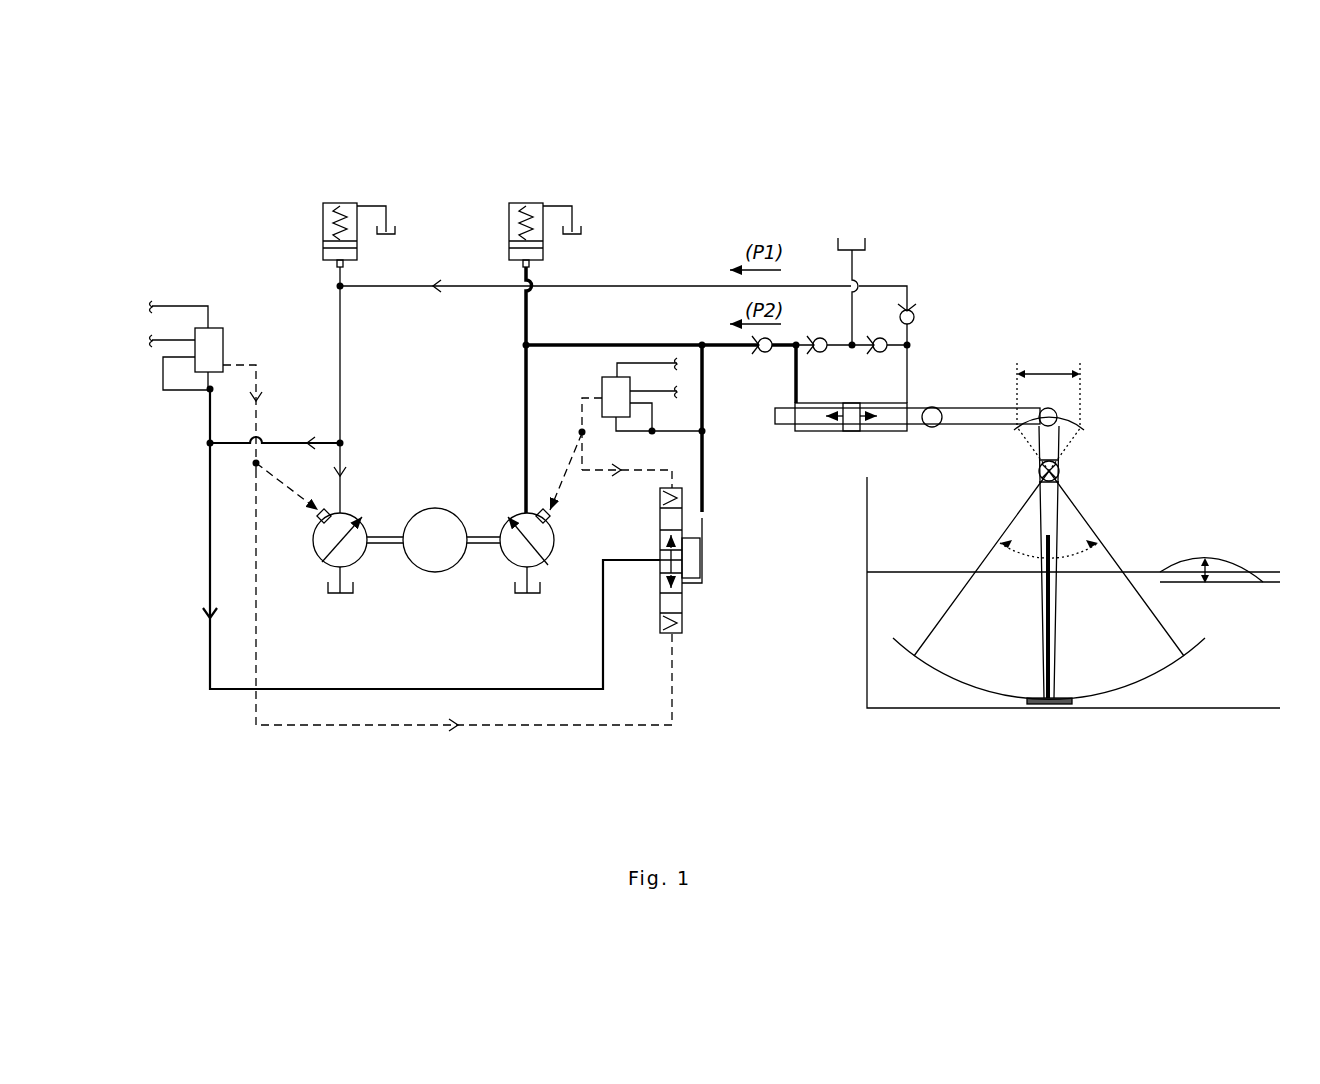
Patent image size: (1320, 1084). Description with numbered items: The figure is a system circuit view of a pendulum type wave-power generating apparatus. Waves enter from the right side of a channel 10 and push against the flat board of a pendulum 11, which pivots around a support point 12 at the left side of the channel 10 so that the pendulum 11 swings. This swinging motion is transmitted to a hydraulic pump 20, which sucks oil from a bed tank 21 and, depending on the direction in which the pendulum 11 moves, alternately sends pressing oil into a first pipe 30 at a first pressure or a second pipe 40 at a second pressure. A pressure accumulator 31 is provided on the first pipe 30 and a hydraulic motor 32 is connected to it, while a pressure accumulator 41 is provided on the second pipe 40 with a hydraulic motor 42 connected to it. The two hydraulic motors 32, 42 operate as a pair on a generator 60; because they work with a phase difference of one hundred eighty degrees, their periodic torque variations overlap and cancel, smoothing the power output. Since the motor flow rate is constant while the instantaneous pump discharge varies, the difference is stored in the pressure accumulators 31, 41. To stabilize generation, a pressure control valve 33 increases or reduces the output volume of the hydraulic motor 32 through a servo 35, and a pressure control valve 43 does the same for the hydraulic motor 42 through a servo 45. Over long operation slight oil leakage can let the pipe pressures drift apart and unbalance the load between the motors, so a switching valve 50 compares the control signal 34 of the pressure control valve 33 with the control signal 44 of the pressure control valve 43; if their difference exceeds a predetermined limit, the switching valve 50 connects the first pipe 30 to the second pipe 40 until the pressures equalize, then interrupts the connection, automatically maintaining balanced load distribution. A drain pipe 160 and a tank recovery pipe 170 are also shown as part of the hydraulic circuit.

The channel 10 is at (1187, 710).
The pendulum 11 is at (1041, 628).
The support point 12 is at (1062, 471).
The hydraulic pump 20 is at (902, 401).
The bed tank 21 is at (870, 243).
The pipe 30 is at (163, 378).
The pressure accumulator 31 is at (334, 200).
The hydraulic motor 32 is at (364, 562).
The pressure control valve 33 is at (222, 327).
The control signal 34 is at (551, 727).
The servo 35 is at (338, 508).
The pipe 40 is at (678, 343).
The pressure accumulator 41 is at (522, 200).
The hydraulic motor 42 is at (506, 562).
The pressure control valve 43 is at (604, 375).
The control signal 44 is at (636, 471).
The servo 45 is at (529, 508).
The switching valve 50 is at (688, 603).
The generator 60 is at (435, 576).
The drain pipe 160 is at (152, 305).
The tank recovery pipe 170 is at (152, 340).